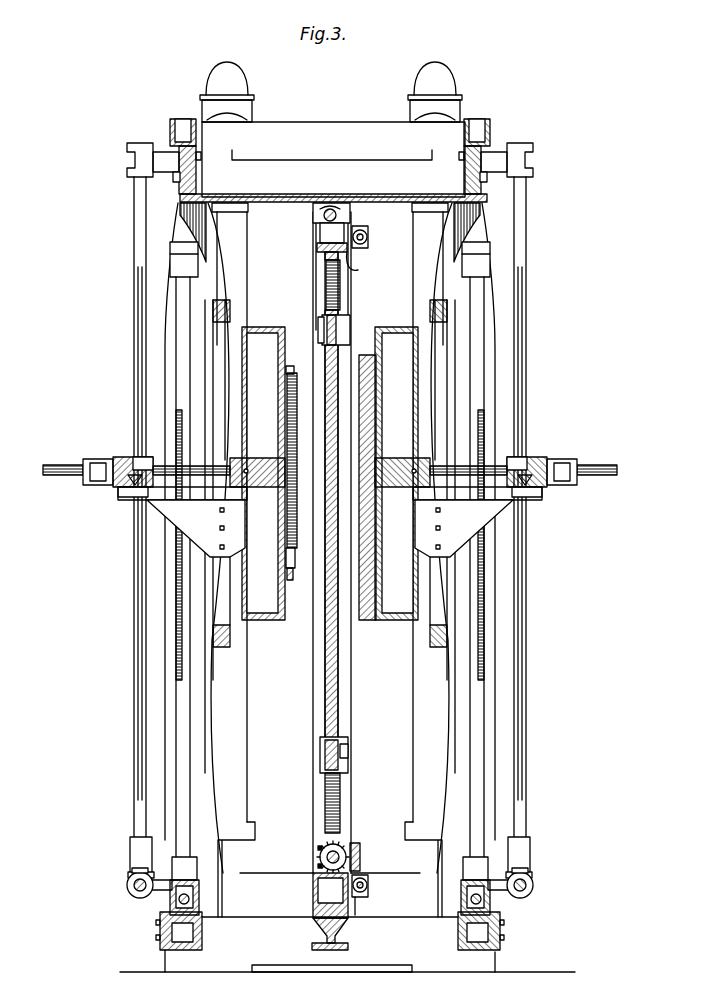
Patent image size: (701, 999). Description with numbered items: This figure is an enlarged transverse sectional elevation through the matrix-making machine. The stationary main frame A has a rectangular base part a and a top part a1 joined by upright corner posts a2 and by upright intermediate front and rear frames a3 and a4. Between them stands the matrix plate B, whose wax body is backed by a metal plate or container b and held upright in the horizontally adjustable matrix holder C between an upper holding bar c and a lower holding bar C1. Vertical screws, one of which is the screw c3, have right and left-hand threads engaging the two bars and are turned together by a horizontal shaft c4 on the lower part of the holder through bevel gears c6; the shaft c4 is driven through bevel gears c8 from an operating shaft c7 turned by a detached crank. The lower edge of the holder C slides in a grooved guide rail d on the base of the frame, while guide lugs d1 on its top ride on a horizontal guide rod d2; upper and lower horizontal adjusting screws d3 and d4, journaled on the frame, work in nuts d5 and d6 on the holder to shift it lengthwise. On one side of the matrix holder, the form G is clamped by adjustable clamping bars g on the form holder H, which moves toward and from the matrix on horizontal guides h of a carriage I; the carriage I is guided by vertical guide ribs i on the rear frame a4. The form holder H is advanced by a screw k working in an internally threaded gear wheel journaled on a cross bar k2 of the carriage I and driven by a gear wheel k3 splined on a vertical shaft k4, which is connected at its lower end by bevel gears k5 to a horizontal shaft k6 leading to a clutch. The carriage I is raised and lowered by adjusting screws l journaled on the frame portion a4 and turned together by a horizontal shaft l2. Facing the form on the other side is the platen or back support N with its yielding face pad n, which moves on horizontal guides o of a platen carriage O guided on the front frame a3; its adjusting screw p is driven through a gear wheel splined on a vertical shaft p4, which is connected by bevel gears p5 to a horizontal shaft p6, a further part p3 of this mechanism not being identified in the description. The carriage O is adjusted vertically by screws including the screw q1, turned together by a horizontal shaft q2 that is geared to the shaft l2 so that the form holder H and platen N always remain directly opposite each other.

The base part a is at (456, 934).
The top part a1 is at (183, 124).
The corner posts a2 is at (237, 258).
The upright front frame a3 is at (497, 660).
The upright rear frame a4 is at (210, 720).
The main frame A is at (204, 934).
The metal plate or container b is at (340, 693).
The matrix plate B is at (325, 662).
The upper holding bar c is at (343, 332).
The matrix holder C is at (313, 735).
The lower holding bar C1 is at (348, 758).
The vertical screw c3 is at (340, 805).
The horizontal shaft c4 is at (318, 878).
The bevel gear c6 is at (345, 848).
The operating shaft c7 is at (362, 856).
The bevel gears c8 is at (318, 866).
The guide rail d is at (320, 935).
The guide lugs d1 is at (320, 234).
The guide rod d2 is at (333, 212).
The upper adjusting screw d3 is at (368, 238).
The lower adjusting screw d4 is at (368, 886).
The upper threaded nut d5 is at (358, 268).
The lower threaded nut d6 is at (356, 905).
The clamping bars g is at (292, 374).
The form G is at (283, 517).
The horizontal guides h is at (182, 522).
The form holder H is at (256, 624).
The vertical guide ribs i is at (222, 300).
The form holder carriage I is at (232, 312).
The screw k is at (50, 464).
The cross bar k2 is at (118, 458).
The gear wheel k3 is at (135, 484).
The vertical shaft k4 is at (135, 637).
The bevel gears k5 is at (130, 874).
The horizontal shaft k6 is at (133, 893).
The adjusting screws l is at (183, 792).
The horizontal shaft l2 is at (199, 892).
The face pad n is at (360, 620).
The platen N is at (405, 326).
The horizontal guides o is at (466, 498).
The platen carriage O is at (432, 620).
The platen adjusting screw p is at (590, 466).
The block p3 is at (520, 465).
The vertical shaft p4 is at (527, 556).
The bevel gears p5 is at (524, 876).
The horizontal shaft p6 is at (533, 890).
The vertical screw q1 is at (480, 777).
The horizontal shaft q2 is at (462, 902).